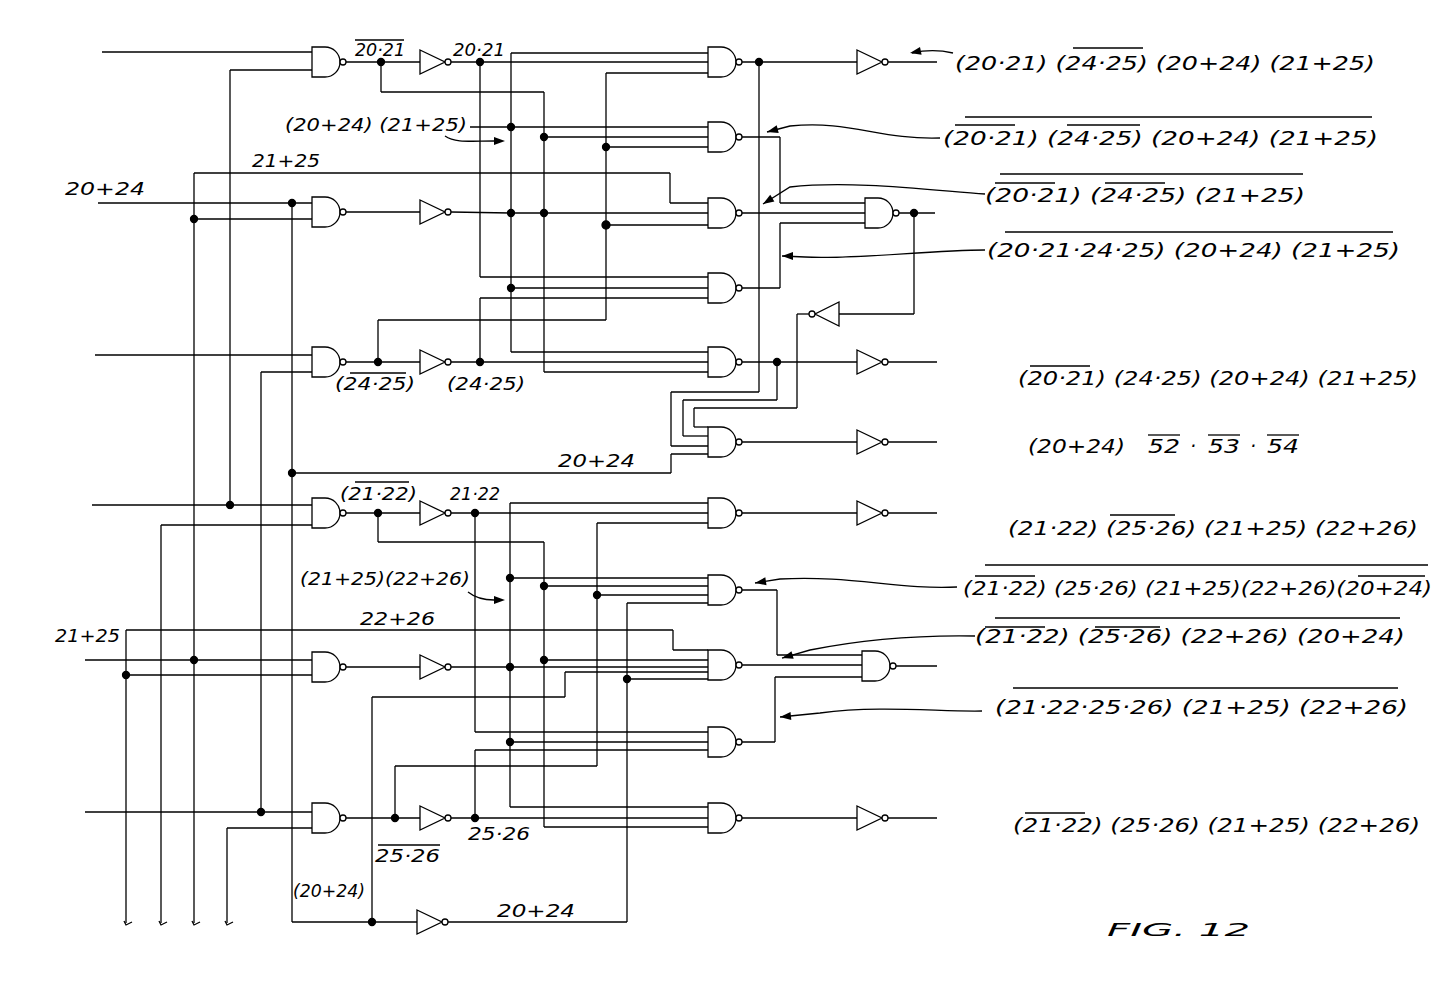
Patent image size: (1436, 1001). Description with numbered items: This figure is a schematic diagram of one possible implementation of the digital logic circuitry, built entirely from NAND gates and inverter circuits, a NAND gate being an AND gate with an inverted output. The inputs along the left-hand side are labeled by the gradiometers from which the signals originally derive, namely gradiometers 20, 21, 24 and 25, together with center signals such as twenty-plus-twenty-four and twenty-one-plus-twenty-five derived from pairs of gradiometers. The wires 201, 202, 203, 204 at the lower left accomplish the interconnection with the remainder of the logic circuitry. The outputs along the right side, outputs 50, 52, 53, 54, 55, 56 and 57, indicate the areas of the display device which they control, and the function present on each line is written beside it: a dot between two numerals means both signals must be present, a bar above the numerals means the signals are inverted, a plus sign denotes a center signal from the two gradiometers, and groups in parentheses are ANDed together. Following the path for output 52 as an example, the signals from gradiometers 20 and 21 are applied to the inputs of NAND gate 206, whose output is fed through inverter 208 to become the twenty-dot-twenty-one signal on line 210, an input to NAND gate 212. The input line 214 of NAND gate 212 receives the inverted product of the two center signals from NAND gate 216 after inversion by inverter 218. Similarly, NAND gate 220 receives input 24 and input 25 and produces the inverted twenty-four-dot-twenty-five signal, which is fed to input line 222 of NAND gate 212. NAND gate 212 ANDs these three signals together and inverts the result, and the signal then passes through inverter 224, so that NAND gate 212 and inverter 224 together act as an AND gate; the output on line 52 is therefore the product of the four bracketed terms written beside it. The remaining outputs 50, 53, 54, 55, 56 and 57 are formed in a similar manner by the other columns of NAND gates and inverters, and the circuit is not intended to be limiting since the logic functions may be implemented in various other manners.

The gradiometer 20 is at (189, 55).
The gradiometer 21 is at (198, 495).
The gradiometer 24 is at (195, 343).
The gradiometer 25 is at (190, 799).
The wire 201 is at (126, 892).
The wire 202 is at (161, 862).
The wire 203 is at (194, 898).
The wire 204 is at (227, 905).
The NAND gate 206 is at (323, 47).
The inverter 208 is at (437, 50).
The line 210 is at (558, 61).
The NAND gate 212 is at (723, 48).
The input line 214 is at (625, 53).
The NAND gate 216 is at (323, 227).
The inverter 218 is at (418, 221).
The NAND gate 220 is at (325, 347).
The input line 222 is at (657, 74).
The inverter 224 is at (857, 66).
The output 50 is at (1020, 446).
The output 52 is at (907, 63).
The output 53 is at (920, 213).
The output 54 is at (1010, 372).
The output 55 is at (873, 535).
The output 56 is at (918, 669).
The output 57 is at (1007, 830).